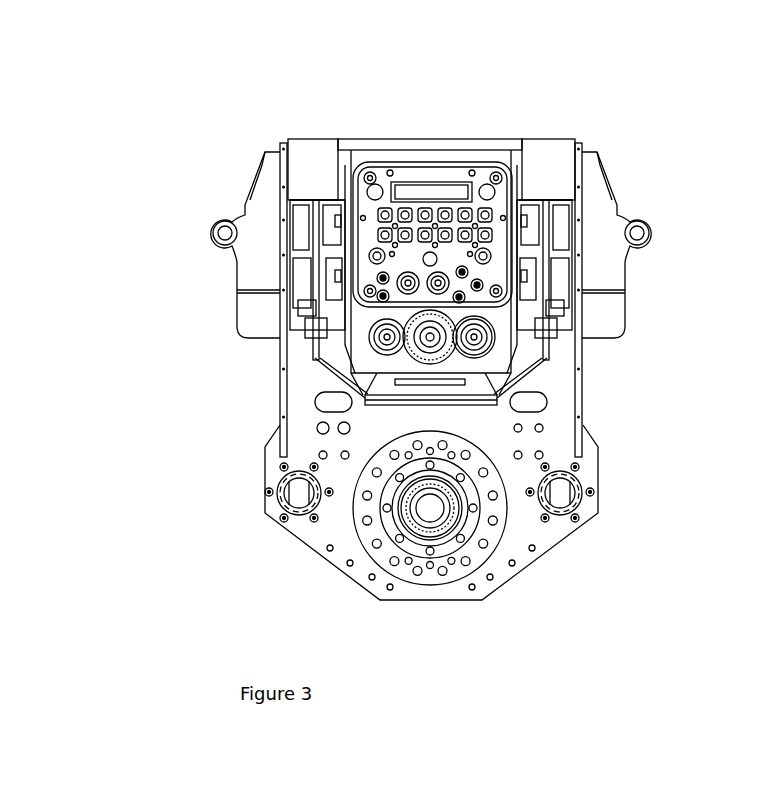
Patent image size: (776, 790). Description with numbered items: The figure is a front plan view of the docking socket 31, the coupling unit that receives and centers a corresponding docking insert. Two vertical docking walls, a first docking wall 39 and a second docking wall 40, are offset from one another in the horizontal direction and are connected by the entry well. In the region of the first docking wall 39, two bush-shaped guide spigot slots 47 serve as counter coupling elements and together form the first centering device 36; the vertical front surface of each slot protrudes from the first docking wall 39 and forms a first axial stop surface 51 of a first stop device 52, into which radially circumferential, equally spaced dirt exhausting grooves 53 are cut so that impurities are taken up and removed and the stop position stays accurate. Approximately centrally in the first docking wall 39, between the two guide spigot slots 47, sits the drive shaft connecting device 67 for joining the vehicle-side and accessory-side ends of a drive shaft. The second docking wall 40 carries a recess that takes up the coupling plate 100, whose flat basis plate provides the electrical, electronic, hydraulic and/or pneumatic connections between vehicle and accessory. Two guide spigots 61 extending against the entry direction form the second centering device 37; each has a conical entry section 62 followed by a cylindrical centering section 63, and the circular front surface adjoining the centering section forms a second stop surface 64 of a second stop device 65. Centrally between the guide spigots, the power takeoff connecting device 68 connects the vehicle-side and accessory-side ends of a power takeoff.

The docking socket 31 is at (253, 122).
The coupling plate 100 is at (441, 174).
The second docking wall 40 is at (505, 150).
The power takeoff connecting device 68 is at (443, 330).
The guide spigots 61 is at (611, 318).
The conical entry section 62 is at (611, 318).
The cylindrical centering section 63 is at (487, 335).
The second centering device 37 is at (493, 342).
The second stop surface 64 is at (262, 352).
The second stop device 65 is at (370, 332).
The first axial stop surface 51 is at (228, 501).
The first stop device 52 is at (228, 501).
The dirt exhausting grooves 53 is at (283, 473).
The bush-shaped guide spigot slots 47 is at (290, 492).
The first centering device 36 is at (580, 480).
The first docking wall 39 is at (522, 520).
The drive shaft connecting device 67 is at (447, 533).